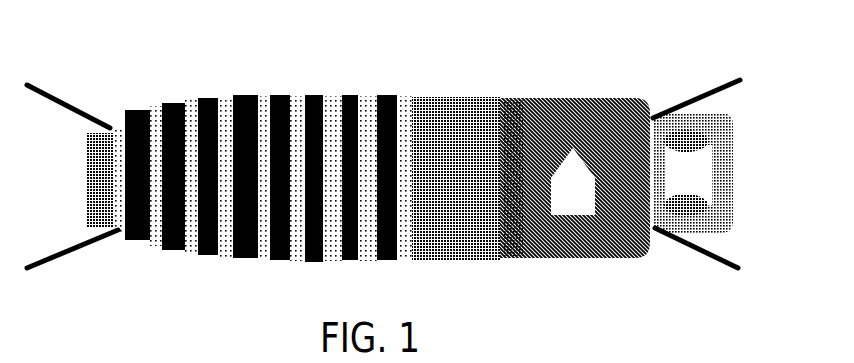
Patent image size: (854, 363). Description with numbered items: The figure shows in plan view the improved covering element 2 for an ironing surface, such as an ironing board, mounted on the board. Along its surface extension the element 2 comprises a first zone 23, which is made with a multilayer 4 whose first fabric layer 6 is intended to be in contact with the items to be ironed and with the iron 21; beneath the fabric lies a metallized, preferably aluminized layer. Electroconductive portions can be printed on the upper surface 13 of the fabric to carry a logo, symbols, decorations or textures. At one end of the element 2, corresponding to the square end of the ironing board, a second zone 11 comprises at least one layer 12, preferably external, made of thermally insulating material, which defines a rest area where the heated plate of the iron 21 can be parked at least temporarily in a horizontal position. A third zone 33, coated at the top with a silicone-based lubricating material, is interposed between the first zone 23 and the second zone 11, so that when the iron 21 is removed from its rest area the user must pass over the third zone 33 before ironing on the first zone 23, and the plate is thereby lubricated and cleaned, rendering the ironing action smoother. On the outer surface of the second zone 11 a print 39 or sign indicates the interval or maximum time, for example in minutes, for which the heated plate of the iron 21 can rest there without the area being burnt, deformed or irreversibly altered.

The improved covering element 2 is at (409, 167).
The multilayer 4 is at (295, 90).
The first fabric layer 6 is at (375, 112).
The second zone 11 is at (573, 120).
The layer of thermally insulating material 12 is at (637, 150).
The upper surface 13 is at (192, 230).
The iron 21 is at (573, 197).
The first zone 23 is at (174, 125).
The third zone 33 is at (452, 128).
The print 39 is at (525, 107).